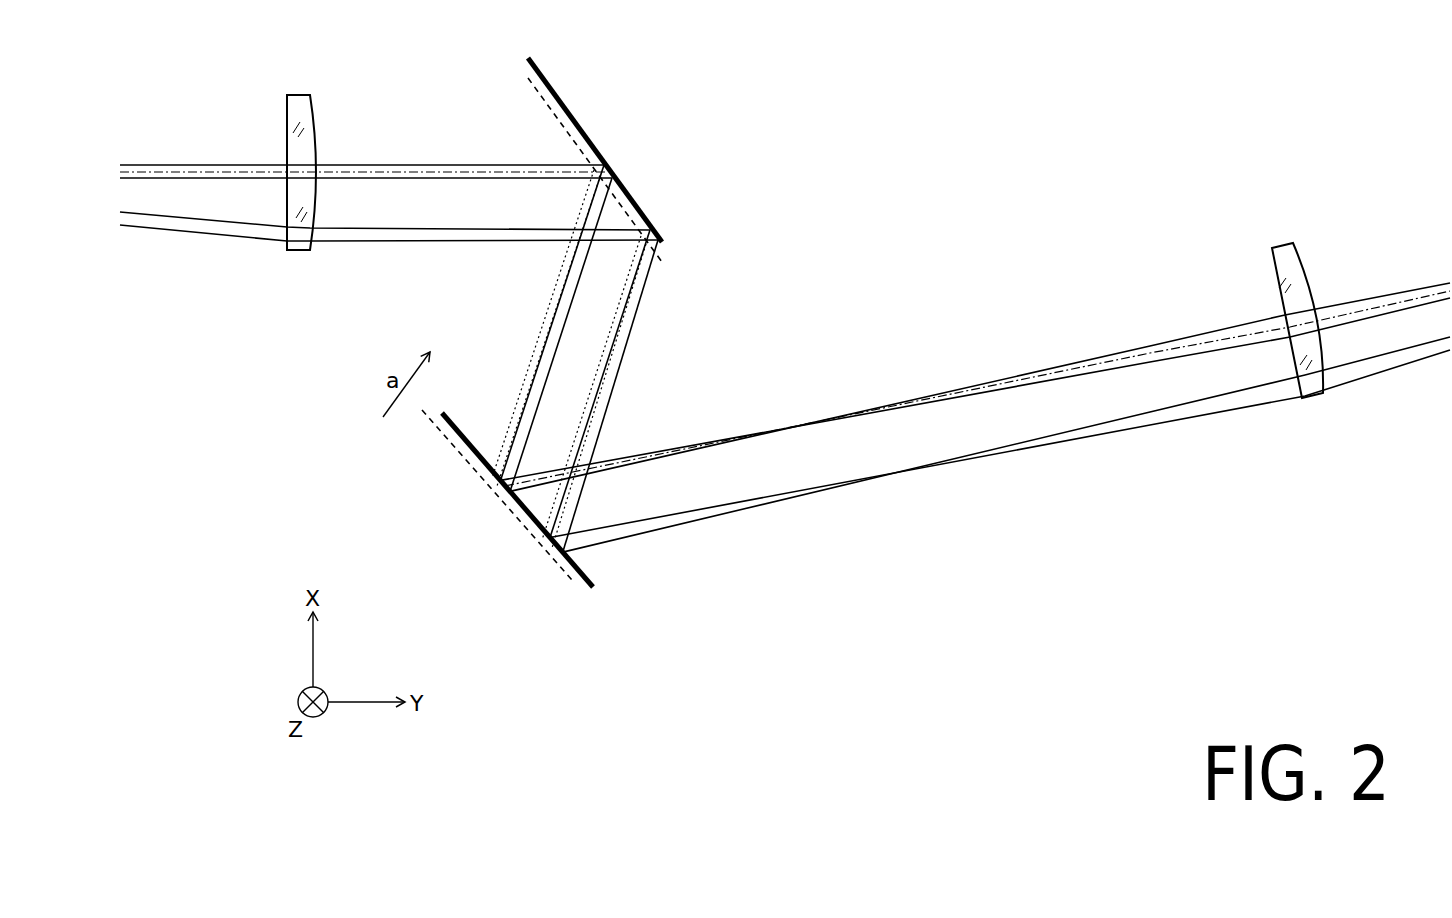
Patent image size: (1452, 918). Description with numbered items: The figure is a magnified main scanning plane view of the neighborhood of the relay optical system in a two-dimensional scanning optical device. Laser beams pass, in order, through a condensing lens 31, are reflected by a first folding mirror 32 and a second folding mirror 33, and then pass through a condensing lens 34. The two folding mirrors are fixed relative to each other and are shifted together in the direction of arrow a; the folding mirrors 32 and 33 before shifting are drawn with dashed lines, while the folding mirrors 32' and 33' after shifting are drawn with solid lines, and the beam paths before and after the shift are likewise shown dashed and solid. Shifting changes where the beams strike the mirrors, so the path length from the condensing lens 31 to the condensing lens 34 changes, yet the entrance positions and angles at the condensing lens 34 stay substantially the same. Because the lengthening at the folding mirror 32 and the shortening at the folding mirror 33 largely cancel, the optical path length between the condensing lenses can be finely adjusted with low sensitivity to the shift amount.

The condensing lens 31 is at (287, 104).
The folding mirror 32 is at (574, 170).
The folding mirror after shifting 32' is at (595, 150).
The folding mirror 33 is at (481, 495).
The folding mirror after shifting 33' is at (556, 501).
The condensing lens 34 is at (1278, 273).